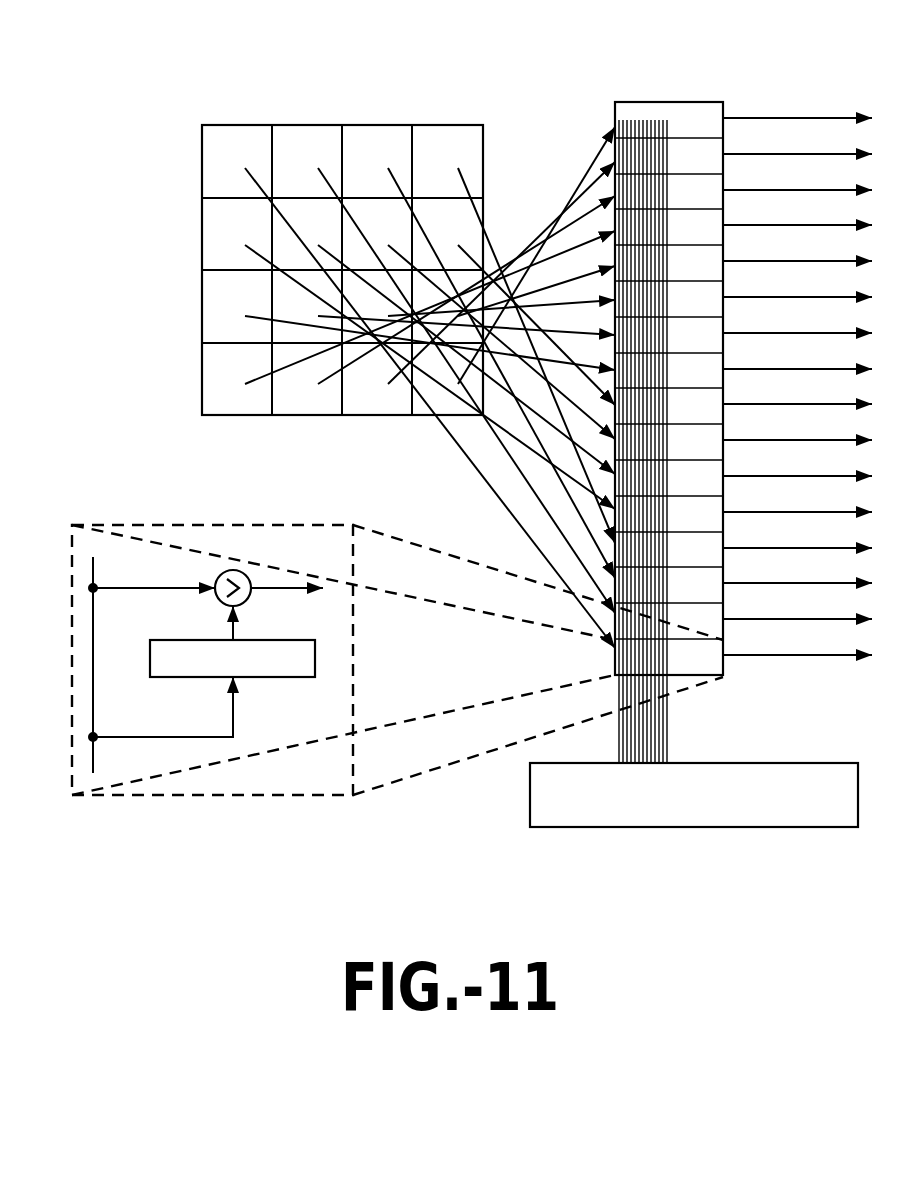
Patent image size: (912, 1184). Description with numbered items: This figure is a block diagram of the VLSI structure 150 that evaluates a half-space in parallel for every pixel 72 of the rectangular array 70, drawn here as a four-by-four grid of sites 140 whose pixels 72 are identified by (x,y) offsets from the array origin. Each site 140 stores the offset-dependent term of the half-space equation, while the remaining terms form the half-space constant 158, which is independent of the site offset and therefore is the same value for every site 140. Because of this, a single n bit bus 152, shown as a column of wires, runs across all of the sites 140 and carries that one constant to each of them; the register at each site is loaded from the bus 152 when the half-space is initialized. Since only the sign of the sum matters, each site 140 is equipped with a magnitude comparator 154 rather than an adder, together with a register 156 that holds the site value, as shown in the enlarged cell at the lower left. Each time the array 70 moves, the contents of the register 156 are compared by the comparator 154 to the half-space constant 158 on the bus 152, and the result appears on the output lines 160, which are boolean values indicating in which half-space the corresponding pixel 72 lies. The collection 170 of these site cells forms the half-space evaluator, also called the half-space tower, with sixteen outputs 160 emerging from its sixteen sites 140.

The rectangular array 70 is at (162, 219).
The pixel 72 is at (213, 320).
The site 140 is at (137, 524).
The VLSI structure 150 is at (368, 458).
The n bit bus 152 is at (667, 721).
The magnitude comparator 154 is at (248, 599).
The register 156 is at (250, 678).
The half-space constant 158 is at (778, 762).
The output lines 160 is at (777, 226).
The collection of site cells 170 is at (617, 82).